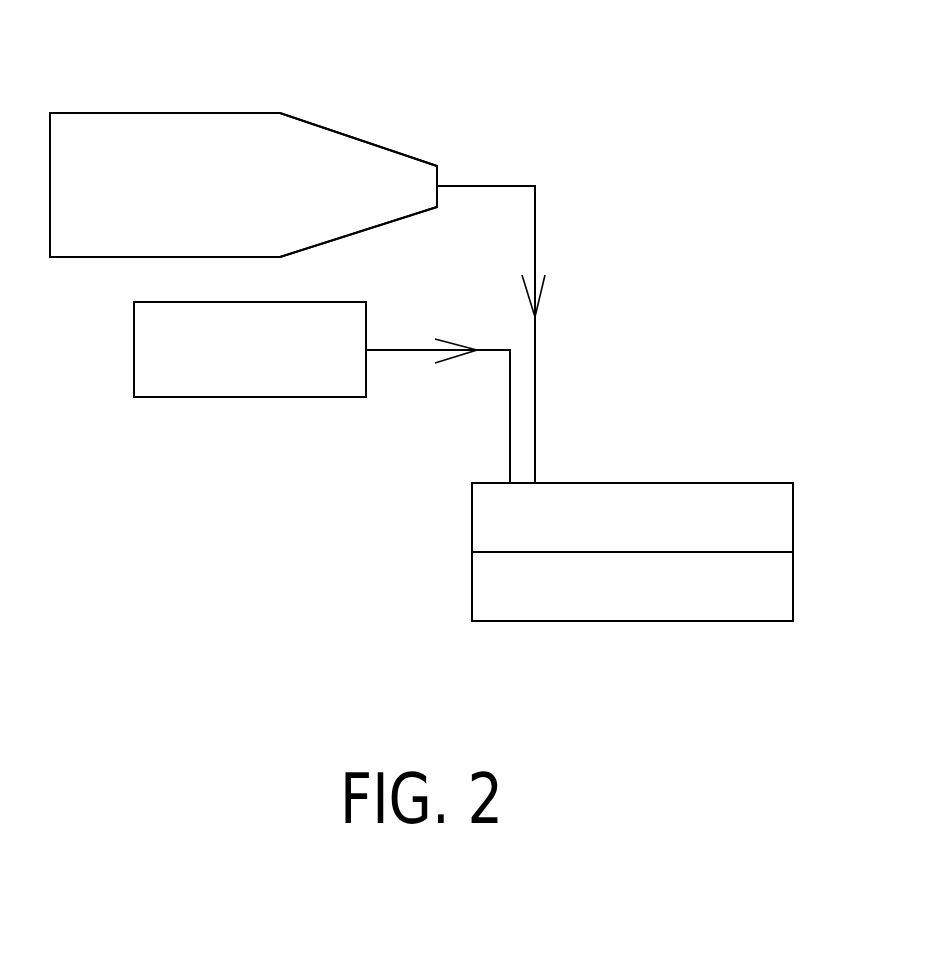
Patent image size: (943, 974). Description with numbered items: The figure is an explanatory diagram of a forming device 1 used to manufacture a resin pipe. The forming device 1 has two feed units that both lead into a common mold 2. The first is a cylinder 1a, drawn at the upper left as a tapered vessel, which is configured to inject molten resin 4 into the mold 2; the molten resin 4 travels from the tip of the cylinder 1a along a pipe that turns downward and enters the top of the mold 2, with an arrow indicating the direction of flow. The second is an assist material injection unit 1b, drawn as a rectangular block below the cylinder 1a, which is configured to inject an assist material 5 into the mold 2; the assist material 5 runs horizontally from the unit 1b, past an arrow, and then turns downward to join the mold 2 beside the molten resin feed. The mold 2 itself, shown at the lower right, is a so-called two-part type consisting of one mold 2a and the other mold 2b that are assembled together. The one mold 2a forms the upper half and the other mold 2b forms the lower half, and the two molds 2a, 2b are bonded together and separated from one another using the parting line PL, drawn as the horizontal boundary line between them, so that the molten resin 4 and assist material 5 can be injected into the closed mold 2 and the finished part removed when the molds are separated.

The forming device 1 is at (390, 134).
The cylinder 1a is at (86, 245).
The assist material injection unit 1b is at (247, 377).
The molten resin 4 is at (537, 228).
The assist material 5 is at (413, 350).
The mold 2 is at (637, 478).
The one mold 2a is at (718, 503).
The other mold 2b is at (717, 605).
The parting line PL is at (508, 552).